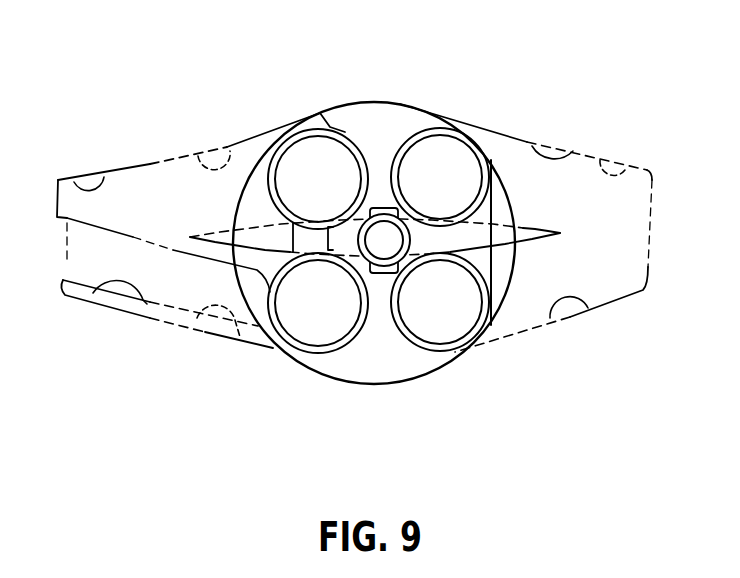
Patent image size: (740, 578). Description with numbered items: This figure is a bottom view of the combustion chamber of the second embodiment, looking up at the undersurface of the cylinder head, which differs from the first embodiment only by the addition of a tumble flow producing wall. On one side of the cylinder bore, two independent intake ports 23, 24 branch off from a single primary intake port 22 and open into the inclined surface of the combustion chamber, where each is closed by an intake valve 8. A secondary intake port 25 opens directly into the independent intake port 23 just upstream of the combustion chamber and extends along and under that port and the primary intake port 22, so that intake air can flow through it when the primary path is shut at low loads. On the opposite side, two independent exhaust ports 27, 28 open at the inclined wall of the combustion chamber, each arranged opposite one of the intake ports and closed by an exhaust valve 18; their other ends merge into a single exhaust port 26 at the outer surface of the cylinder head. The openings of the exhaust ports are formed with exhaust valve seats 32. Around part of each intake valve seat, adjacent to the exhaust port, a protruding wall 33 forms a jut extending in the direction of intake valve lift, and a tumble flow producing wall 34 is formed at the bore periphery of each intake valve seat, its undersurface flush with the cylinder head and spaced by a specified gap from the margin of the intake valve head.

The intake valve 8 is at (283, 135).
The exhaust valve 18 is at (417, 133).
The primary intake port 22 is at (70, 170).
The independent intake port 23 is at (192, 336).
The independent intake port 24 is at (193, 150).
The secondary intake port 25 is at (90, 300).
The exhaust port 26 is at (642, 170).
The independent exhaust port 27 is at (592, 308).
The independent exhaust port 28 is at (580, 143).
The exhaust valve seat 32 is at (438, 130).
The protruding wall 33 is at (347, 130).
The tumble flow producing wall 34 is at (246, 140).